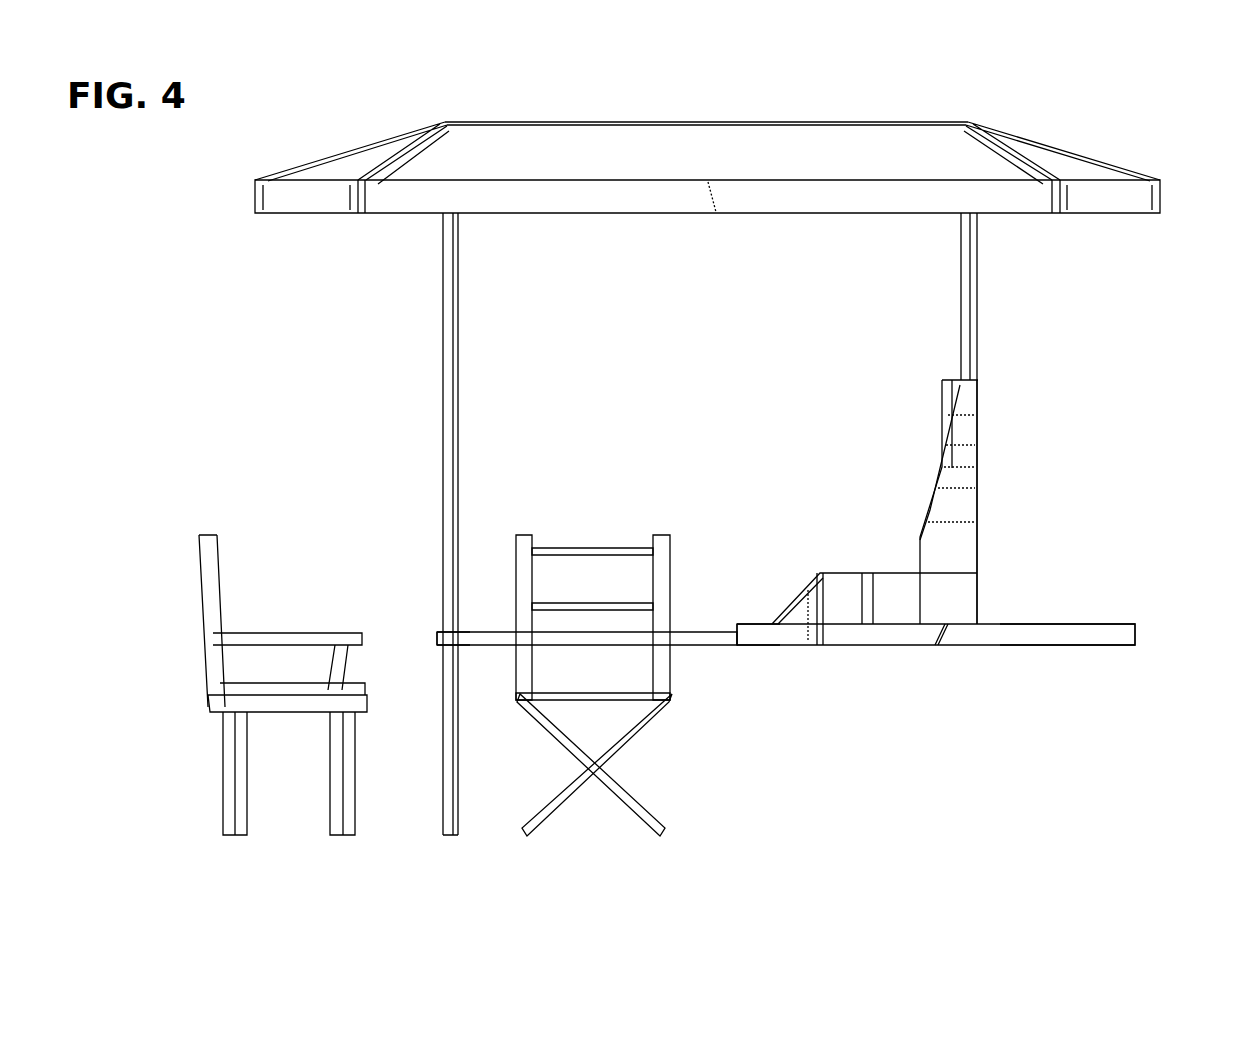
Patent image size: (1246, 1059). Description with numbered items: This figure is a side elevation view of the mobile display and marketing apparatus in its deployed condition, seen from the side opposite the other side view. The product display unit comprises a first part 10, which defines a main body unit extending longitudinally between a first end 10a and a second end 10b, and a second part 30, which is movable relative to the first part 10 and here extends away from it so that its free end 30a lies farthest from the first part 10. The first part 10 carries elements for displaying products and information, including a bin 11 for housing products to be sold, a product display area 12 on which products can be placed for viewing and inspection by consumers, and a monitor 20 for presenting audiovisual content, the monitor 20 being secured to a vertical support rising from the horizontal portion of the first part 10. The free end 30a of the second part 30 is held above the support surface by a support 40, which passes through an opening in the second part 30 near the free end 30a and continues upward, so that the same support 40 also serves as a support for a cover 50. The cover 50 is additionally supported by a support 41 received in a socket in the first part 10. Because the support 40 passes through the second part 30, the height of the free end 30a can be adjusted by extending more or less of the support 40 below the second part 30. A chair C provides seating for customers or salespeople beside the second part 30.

The cover 50 is at (715, 150).
The support 40 is at (457, 393).
The support 41 is at (977, 328).
The bin 11 is at (977, 505).
The monitor 20 is at (940, 407).
The product display area 12 is at (762, 597).
The first part 10 is at (940, 645).
The first end 10a is at (1135, 633).
The second end 10b is at (726, 645).
The second part 30 is at (487, 632).
The free end 30a is at (437, 638).
The chair C is at (208, 655).